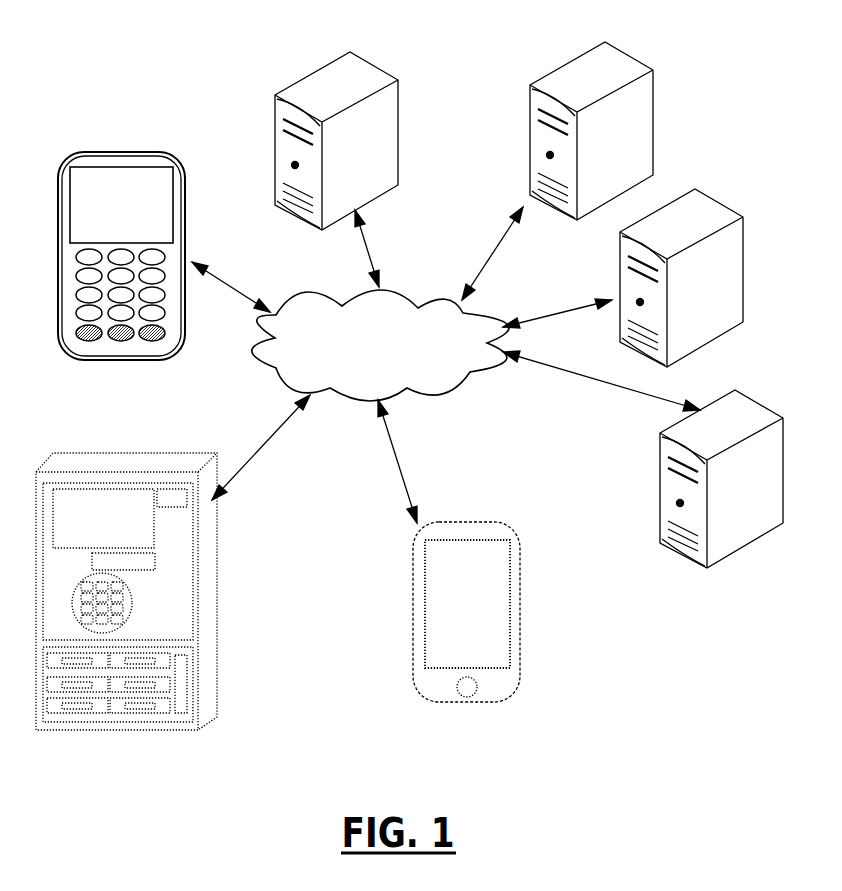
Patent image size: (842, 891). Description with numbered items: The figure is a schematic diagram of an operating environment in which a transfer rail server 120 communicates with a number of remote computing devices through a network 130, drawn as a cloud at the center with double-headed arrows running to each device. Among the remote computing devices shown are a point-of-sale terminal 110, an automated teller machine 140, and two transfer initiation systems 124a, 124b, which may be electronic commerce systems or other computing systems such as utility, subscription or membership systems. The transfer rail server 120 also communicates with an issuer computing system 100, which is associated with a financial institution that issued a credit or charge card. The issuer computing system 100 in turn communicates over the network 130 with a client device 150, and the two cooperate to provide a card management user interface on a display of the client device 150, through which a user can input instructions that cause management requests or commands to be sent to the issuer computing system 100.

The issuer computing system 100 is at (749, 417).
The point-of-sale (POS) terminal 110 is at (118, 152).
The transfer rail server 120 is at (366, 70).
The transfer initiation system 124a is at (622, 62).
The transfer initiation system 124b is at (711, 210).
The network 130 is at (360, 359).
The automated teller machine (ATM) 140 is at (132, 465).
The client device 150 is at (448, 522).